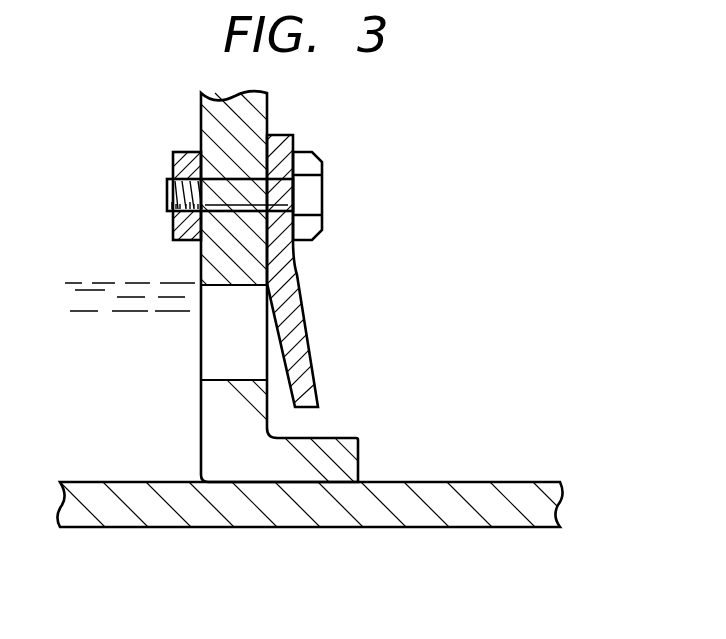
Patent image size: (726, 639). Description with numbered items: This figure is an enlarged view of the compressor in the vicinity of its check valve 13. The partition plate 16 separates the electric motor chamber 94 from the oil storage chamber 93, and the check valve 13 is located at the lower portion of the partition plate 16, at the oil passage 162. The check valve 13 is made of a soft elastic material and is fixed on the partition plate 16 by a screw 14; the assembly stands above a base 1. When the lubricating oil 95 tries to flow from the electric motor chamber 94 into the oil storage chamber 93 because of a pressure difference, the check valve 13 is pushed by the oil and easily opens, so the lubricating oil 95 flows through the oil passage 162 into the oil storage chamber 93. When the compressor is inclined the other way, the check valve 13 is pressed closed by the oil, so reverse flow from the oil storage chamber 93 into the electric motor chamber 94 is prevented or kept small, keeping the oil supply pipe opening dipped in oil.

The base plate 1 is at (512, 527).
The check valve 13 is at (315, 370).
The screw 14 is at (322, 192).
The partition plate 16 is at (202, 125).
The oil passage 162 is at (201, 354).
The oil storage chamber 93 is at (426, 283).
The electric motor chamber 94 is at (101, 236).
The lubricating oil 95 is at (137, 462).